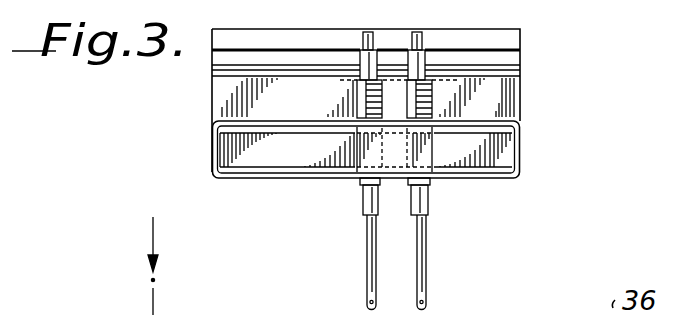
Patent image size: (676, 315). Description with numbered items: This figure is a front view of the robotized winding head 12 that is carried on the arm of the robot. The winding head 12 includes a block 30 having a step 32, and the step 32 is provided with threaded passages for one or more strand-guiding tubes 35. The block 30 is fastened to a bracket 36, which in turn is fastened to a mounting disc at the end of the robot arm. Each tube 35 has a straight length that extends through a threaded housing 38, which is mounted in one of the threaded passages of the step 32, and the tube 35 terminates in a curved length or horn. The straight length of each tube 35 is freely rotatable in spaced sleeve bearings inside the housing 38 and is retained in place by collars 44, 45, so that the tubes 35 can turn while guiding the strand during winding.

The robotized winding head 12 is at (297, 183).
The block 30 is at (507, 90).
The step 32 is at (505, 147).
The strand-guiding tube 35 is at (378, 250).
The bracket 36 is at (506, 60).
The threaded housing 38 is at (410, 107).
The collar 44 is at (407, 49).
The collar 45 is at (378, 205).